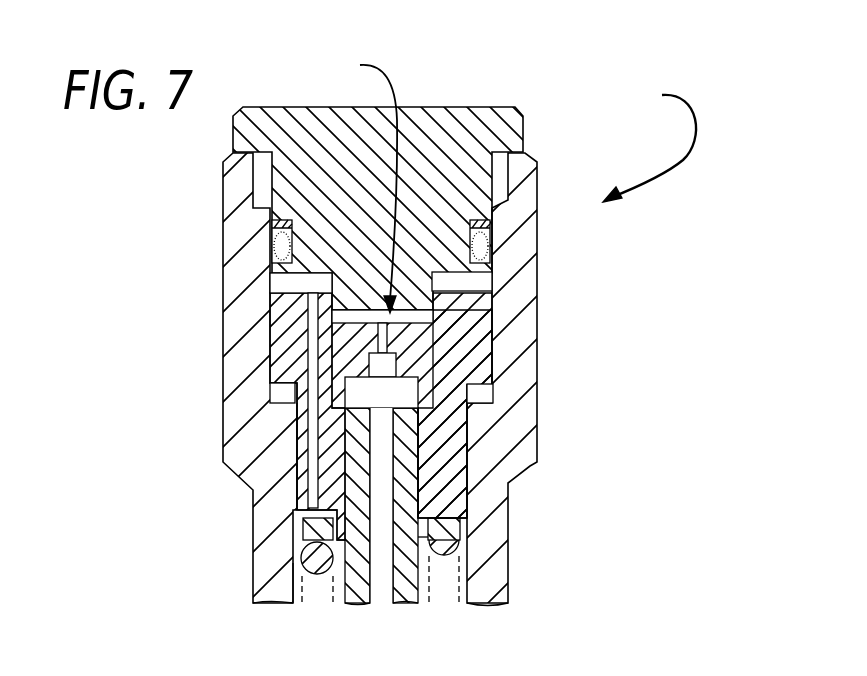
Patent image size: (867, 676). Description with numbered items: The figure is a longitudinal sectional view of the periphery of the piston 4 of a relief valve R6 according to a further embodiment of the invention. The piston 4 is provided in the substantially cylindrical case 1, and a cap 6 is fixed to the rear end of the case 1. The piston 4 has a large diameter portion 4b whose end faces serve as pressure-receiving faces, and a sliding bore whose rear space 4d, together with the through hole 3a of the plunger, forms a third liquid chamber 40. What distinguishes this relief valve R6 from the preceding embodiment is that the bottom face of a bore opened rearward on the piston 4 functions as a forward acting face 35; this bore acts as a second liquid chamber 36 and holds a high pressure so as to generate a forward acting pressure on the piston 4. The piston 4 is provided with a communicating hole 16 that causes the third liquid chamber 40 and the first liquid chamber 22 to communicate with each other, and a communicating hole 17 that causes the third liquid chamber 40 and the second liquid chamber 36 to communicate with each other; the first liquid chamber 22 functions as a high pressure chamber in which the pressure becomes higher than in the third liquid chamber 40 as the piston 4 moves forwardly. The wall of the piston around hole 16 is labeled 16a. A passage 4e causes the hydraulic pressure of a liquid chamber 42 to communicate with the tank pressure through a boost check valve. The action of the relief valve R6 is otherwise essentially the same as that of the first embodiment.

The case 1 is at (522, 182).
The through hole 3a is at (383, 440).
The piston 4 is at (337, 362).
The large diameter portion (second sliding portion) 4b is at (282, 335).
The rear space 4d is at (363, 395).
The passage 4e is at (313, 485).
The cap 6 is at (505, 132).
The communicating hole 16 is at (453, 397).
The sleeve wall 16a is at (427, 395).
The communicating hole 17 is at (388, 338).
The first liquid chamber 22 is at (482, 392).
The forward acting face 35 is at (356, 178).
The second liquid chamber 36 is at (420, 316).
The third liquid chamber 40 is at (241, 490).
The liquid chamber 42 is at (477, 282).
The relief valve R6 is at (649, 136).